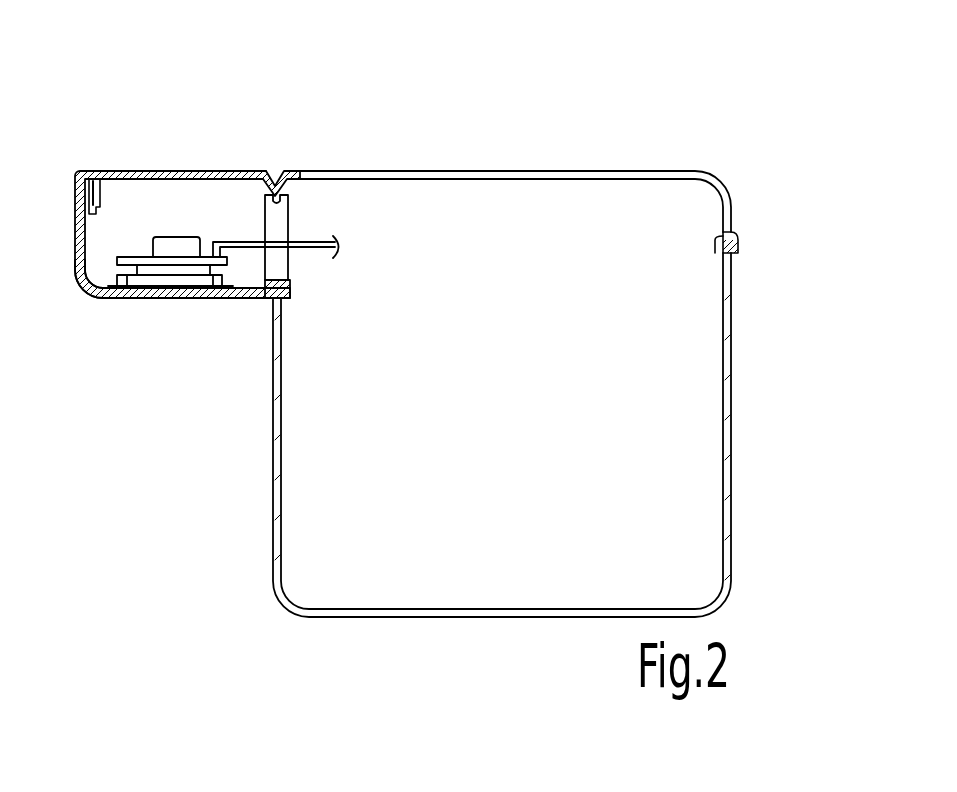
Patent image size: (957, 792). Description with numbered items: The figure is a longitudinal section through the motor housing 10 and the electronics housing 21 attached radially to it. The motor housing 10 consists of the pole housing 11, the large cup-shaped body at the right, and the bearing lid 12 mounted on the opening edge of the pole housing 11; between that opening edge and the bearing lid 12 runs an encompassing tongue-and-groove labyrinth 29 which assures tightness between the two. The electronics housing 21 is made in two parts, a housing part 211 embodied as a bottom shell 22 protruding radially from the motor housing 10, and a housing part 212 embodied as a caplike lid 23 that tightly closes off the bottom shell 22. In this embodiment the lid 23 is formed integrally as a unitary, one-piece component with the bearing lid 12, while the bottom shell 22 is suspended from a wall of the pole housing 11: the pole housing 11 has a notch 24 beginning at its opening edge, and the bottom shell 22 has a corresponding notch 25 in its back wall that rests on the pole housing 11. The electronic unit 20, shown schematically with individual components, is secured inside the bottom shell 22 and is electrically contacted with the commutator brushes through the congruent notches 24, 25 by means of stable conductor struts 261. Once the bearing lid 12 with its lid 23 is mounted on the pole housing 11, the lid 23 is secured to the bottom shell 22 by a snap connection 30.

The motor housing 10 is at (718, 168).
The pole housing 11 is at (731, 453).
The bearing lid 12 is at (565, 173).
The electronic unit 20 is at (150, 300).
The electronics housing 21 is at (160, 202).
The housing part 211 is at (80, 300).
The housing part 212 is at (162, 166).
The bottom shell 22 is at (178, 300).
The lid 23 is at (203, 172).
The notch 24 is at (291, 278).
The notch 25 is at (258, 263).
The conductor struts 261 is at (321, 237).
The tongue-and-groove labyrinth 29 is at (739, 236).
The snap connection 30 is at (82, 172).